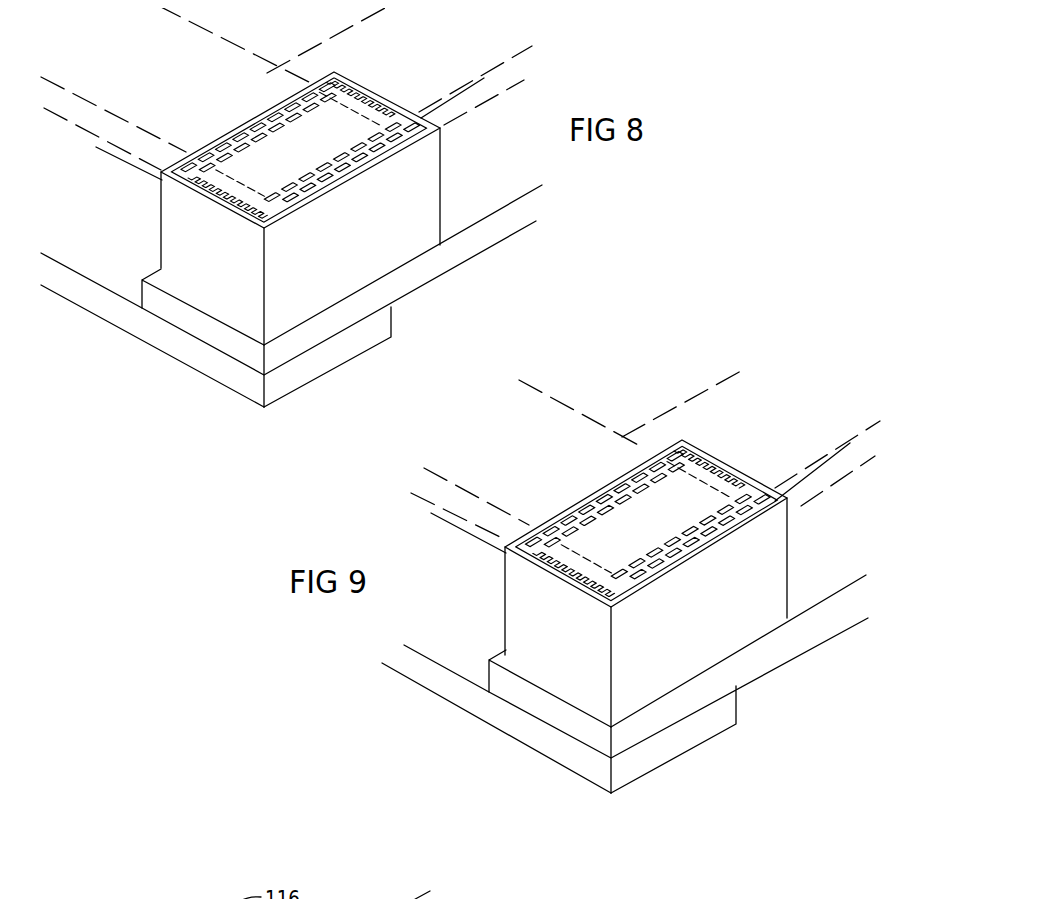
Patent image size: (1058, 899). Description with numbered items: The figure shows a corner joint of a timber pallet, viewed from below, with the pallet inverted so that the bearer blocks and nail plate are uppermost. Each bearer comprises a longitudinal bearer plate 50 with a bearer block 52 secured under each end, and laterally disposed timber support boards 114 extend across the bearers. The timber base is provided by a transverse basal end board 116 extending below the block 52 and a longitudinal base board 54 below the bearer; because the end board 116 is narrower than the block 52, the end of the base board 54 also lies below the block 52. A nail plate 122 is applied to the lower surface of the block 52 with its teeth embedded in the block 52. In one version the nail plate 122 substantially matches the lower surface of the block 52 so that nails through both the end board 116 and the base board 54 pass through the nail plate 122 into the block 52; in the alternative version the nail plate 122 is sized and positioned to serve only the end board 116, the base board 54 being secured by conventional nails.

In FIG. 8, the longitudinal bearer plate 50 is at (470, 243).
In FIG. 9, the longitudinal bearer plate 50 is at (760, 657).
In FIG. 8, the bearer block 52 is at (230, 300).
In FIG. 9, the bearer block 52 is at (570, 685).
In FIG. 8, the longitudinal base board 54 is at (487, 93).
In FIG. 9, the longitudinal base board 54 is at (826, 467).
In FIG. 8, the timber support board 114 is at (108, 304).
In FIG. 9, the timber support board 114 is at (430, 673).
In FIG. 8, the transverse basal end board 116 is at (87, 122).
In FIG. 9, the transverse basal end board 116 is at (437, 498).
In FIG. 8, the nail plate 122 is at (348, 83).
In FIG. 9, the nail plate 122 is at (673, 462).